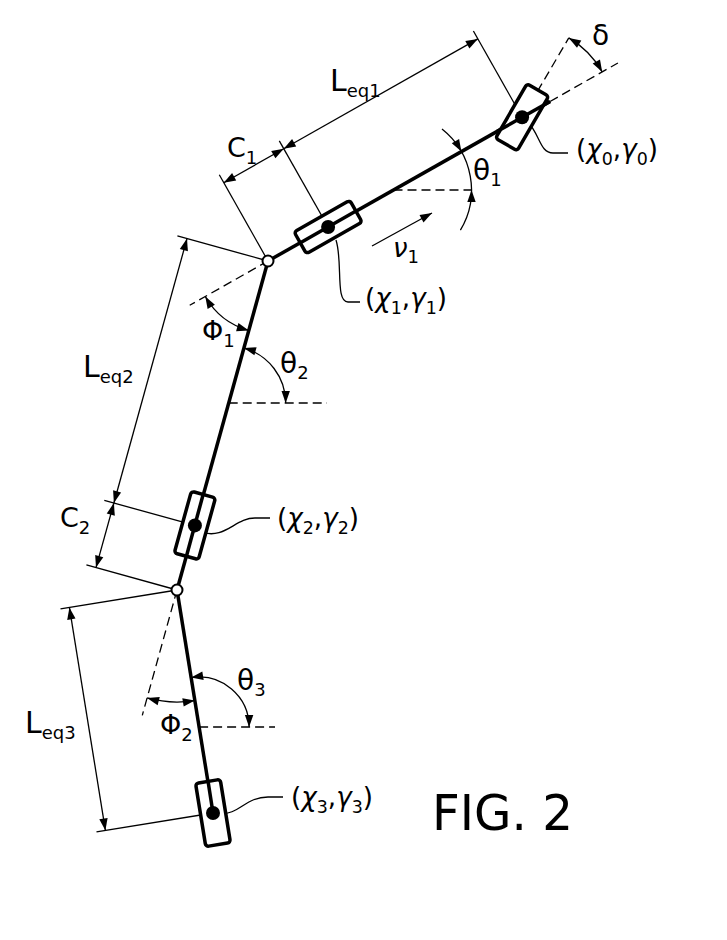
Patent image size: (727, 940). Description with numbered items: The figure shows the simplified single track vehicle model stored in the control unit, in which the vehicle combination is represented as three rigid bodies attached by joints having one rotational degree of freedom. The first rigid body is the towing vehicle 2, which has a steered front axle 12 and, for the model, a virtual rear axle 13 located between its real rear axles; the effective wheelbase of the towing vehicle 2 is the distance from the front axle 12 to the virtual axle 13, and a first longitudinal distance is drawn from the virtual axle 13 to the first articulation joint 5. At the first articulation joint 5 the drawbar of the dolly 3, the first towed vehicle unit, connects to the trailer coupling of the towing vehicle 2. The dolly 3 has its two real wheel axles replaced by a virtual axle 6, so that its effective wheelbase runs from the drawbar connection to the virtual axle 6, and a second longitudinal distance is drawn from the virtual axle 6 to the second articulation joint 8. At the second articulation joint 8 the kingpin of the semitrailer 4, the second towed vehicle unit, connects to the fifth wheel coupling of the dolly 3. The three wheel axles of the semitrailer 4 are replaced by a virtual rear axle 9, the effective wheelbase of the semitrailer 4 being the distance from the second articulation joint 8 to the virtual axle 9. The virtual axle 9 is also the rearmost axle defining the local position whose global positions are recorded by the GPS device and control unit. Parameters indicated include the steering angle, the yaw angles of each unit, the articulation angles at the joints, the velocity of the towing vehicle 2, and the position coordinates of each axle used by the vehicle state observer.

The towing vehicle 2 is at (385, 193).
The dolly 3 is at (217, 460).
The semitrailer 4 is at (188, 645).
The first articulation joint 5 is at (275, 264).
The virtual axle 6 is at (207, 522).
The second articulation joint 8 is at (183, 591).
The virtual rear axle 9 is at (224, 809).
The front axle 12 is at (530, 132).
The virtual rear axle 13 is at (293, 233).